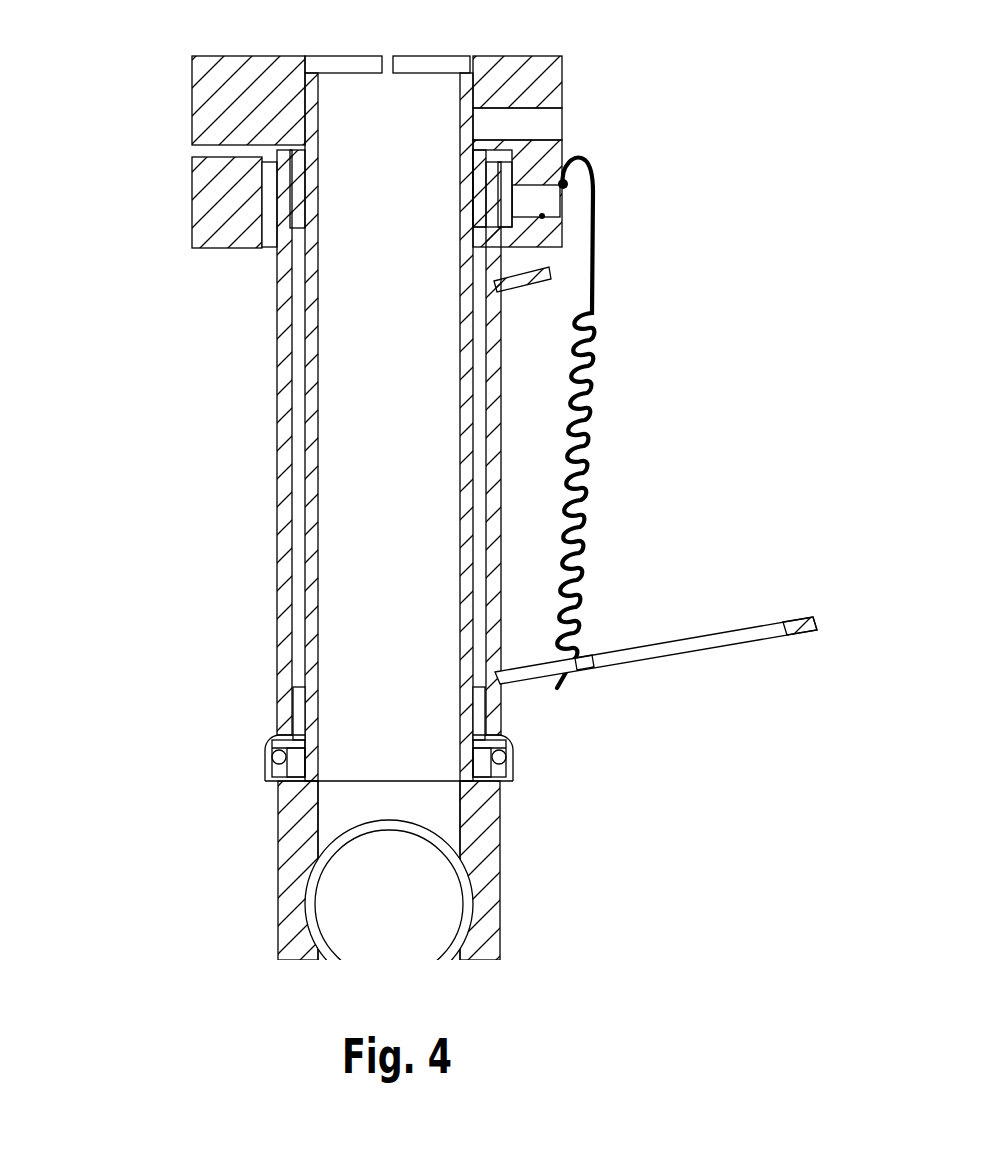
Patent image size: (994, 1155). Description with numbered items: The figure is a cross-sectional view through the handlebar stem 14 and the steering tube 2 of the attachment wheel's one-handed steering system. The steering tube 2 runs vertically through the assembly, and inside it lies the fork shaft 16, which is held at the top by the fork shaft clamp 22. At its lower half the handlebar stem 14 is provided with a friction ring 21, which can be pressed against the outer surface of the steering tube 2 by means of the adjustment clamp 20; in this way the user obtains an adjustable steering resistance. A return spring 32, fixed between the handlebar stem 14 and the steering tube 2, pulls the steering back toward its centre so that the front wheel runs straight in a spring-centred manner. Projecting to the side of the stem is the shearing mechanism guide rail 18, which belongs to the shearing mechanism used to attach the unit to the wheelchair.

The steering tube 2 is at (283, 593).
The handlebar stem 14 is at (493, 60).
The fork shaft 16 is at (312, 493).
The shearing mechanism guide rail 18 is at (717, 637).
The adjustment clamp steering resistance 20 is at (213, 200).
The friction ring 21 is at (507, 230).
The fork shaft clamp 22 is at (217, 88).
The return spring 32 is at (598, 398).